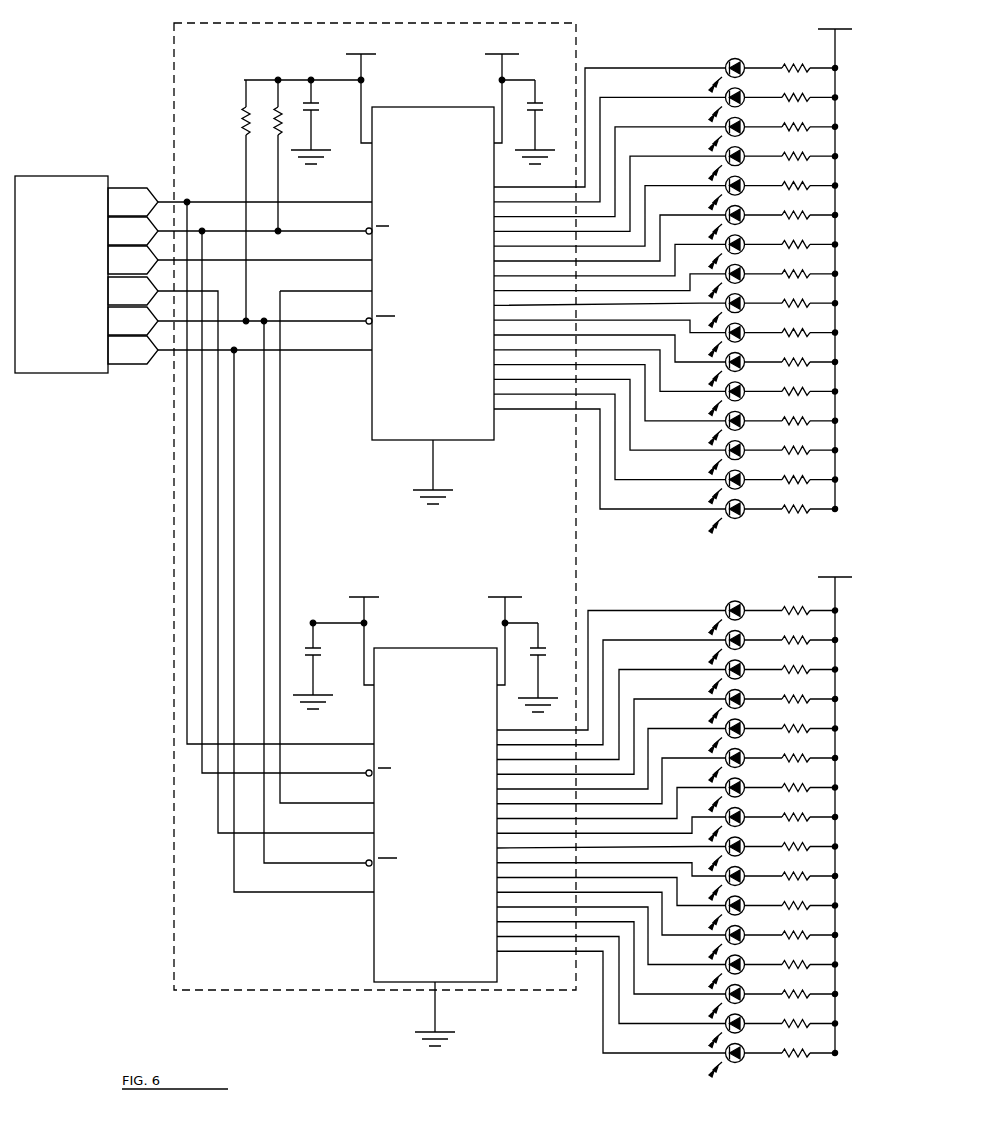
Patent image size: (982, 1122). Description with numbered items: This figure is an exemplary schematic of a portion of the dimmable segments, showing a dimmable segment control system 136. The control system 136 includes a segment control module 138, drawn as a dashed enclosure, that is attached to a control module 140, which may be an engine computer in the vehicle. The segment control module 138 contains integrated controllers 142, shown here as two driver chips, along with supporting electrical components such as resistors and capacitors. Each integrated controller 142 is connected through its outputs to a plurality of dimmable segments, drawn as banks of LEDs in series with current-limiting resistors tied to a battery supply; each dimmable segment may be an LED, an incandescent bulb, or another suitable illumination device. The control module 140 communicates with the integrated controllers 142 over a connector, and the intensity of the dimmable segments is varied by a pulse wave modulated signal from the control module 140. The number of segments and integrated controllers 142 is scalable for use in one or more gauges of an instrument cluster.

The dimmable segment control system 136 is at (126, 527).
The segment control module 138 is at (172, 80).
The control module 140 is at (86, 274).
The integrated controller 142 is at (433, 195).